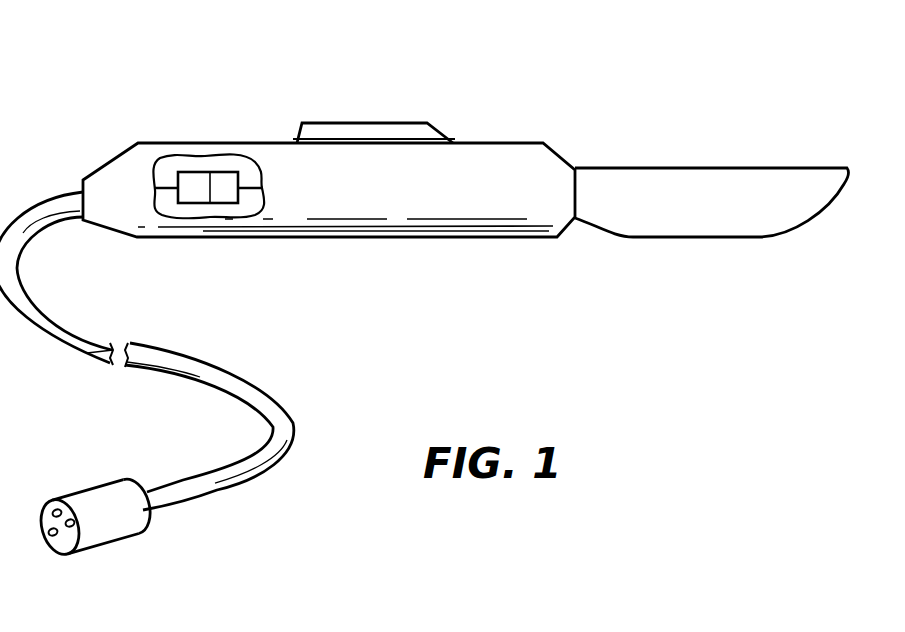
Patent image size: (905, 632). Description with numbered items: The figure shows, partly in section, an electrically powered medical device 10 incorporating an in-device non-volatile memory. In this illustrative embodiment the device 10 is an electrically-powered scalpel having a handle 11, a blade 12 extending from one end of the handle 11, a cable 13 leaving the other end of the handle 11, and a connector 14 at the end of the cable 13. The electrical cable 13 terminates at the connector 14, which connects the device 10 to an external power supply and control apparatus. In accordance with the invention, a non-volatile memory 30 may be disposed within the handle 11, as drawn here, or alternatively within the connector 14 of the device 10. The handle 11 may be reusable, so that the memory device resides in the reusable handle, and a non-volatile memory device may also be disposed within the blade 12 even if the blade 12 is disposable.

The device 10 is at (128, 53).
The handle 11 is at (247, 143).
The blade 12 is at (697, 237).
The cable 13 is at (227, 365).
The connector 14 is at (123, 537).
The non-volatile memory 30 is at (197, 180).